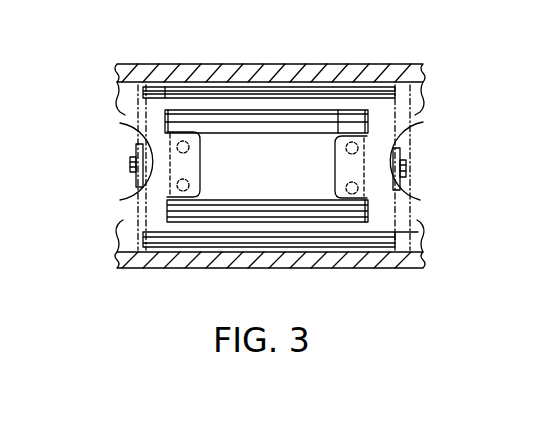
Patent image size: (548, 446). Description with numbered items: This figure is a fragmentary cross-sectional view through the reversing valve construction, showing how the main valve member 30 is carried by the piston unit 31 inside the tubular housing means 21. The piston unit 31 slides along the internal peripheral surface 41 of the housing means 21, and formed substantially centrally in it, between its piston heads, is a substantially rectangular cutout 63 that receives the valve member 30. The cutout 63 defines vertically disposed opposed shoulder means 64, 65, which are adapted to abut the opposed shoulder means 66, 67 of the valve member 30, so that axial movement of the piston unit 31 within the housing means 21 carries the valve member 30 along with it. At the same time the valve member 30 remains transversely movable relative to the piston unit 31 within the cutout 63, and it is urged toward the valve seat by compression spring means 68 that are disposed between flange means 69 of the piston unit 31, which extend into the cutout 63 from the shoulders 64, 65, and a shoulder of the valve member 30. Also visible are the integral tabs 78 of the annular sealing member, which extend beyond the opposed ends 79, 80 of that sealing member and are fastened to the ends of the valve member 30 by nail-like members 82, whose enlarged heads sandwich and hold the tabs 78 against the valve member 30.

The tubular housing means 21 is at (150, 64).
The main valve member 30 is at (287, 115).
The piston unit 31 is at (207, 100).
The internal peripheral surface 41 is at (118, 242).
The rectangular cutout 63 is at (237, 211).
The shoulder means 64 is at (178, 117).
The shoulder means 65 is at (347, 117).
The shoulder means 66 is at (167, 207).
The shoulder means 67 is at (418, 212).
The compression spring means 68 is at (189, 147).
The flange means 69 is at (192, 165).
The integral tabs 78 is at (137, 150).
The end of sealing member 79 is at (117, 108).
The end of sealing member 80 is at (395, 200).
The nail-like members 82 is at (130, 165).